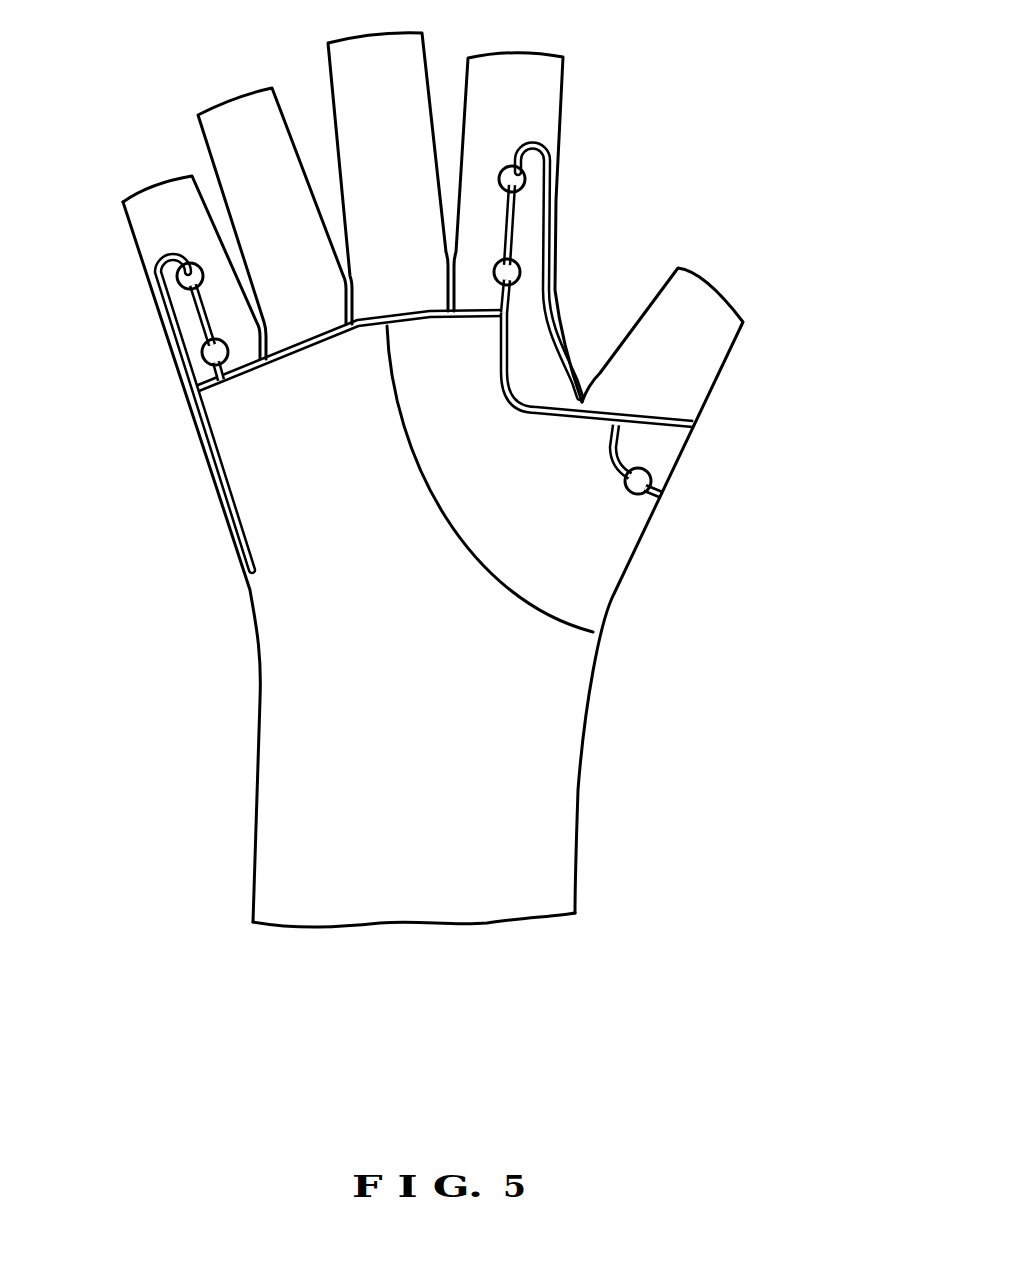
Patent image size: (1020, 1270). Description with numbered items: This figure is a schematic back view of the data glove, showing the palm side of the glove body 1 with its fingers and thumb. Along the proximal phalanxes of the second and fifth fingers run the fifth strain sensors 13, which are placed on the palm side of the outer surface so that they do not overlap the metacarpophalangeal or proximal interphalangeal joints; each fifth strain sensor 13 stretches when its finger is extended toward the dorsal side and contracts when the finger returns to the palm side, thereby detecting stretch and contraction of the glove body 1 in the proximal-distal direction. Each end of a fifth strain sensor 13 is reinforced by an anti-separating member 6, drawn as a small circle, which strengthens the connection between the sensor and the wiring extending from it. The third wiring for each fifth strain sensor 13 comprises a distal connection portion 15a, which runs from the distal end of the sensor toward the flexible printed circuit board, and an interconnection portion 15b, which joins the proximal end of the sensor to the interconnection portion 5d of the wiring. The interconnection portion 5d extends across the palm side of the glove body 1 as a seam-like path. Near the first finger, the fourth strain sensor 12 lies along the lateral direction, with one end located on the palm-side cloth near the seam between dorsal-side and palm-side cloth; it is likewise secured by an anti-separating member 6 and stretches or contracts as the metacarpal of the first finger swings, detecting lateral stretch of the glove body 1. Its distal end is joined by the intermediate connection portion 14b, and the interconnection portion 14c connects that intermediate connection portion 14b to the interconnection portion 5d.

The glove body 1 is at (588, 723).
The interconnection portion 5d is at (593, 632).
The anti-separating member 6 is at (177, 274).
The fourth strain sensor 12 is at (660, 496).
The fifth strain sensor 13 is at (201, 315).
The intermediate connection portion 14b is at (648, 430).
The interconnection portion 14c is at (591, 411).
The distal connection portion 15a is at (213, 460).
The interconnection portion 15b is at (180, 387).